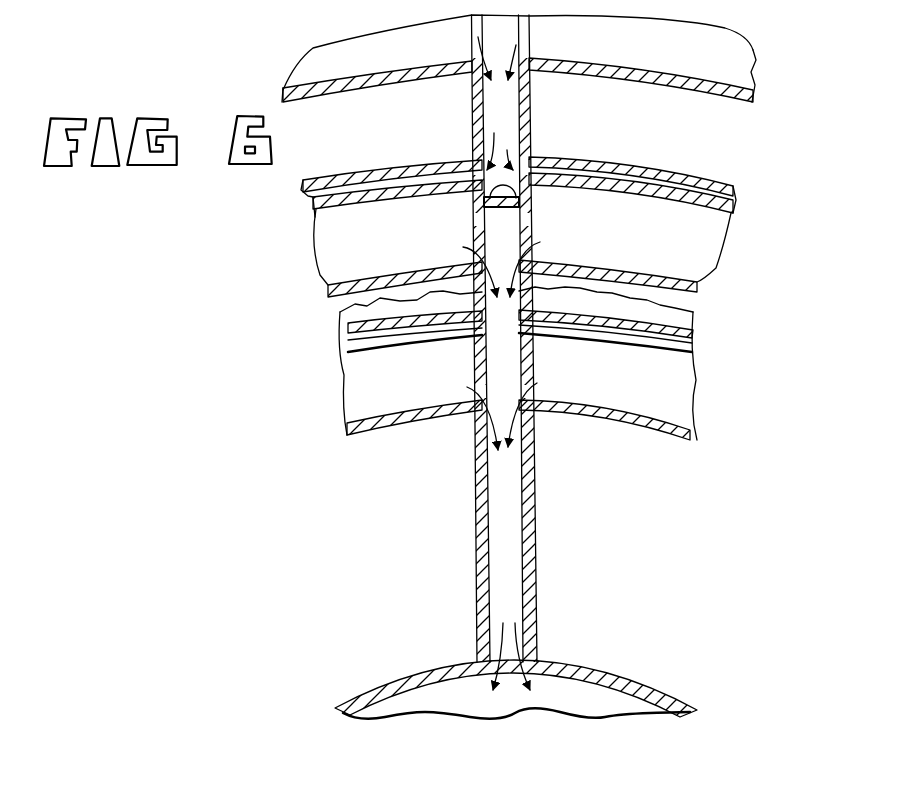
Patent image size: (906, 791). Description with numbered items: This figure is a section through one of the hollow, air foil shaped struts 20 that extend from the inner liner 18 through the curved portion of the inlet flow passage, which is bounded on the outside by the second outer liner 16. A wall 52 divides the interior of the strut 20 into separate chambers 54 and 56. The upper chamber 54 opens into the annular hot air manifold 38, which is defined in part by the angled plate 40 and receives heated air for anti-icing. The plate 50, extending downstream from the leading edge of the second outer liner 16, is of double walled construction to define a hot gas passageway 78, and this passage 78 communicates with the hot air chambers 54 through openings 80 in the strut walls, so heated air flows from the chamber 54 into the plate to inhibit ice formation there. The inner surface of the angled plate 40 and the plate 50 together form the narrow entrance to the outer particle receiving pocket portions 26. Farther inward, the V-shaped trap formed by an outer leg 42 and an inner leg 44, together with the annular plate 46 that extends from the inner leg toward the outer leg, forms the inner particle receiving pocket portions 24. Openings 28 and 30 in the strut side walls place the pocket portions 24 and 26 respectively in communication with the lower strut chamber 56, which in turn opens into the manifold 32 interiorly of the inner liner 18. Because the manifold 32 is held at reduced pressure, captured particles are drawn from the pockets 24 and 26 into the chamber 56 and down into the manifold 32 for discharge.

The second outer liner 16 is at (687, 293).
The inner liner 18 is at (613, 672).
The strut 20 is at (537, 572).
The particle receiving pocket portion 24 is at (385, 410).
The particle receiving pocket portion 26 is at (633, 263).
The opening 28 is at (531, 337).
The opening 30 is at (531, 220).
The manifold 32 is at (562, 691).
The annular manifold 38 is at (517, 58).
The angled plate 40 is at (755, 82).
The outer leg 42 is at (373, 321).
The inner leg 44 is at (283, 473).
The annular plate 46 is at (373, 364).
The plate 50 is at (541, 157).
The wall 52 is at (530, 192).
The strut chamber 54 is at (491, 92).
The strut chamber 56 is at (497, 490).
The hot gas passageway 78 is at (665, 174).
The opening 80 is at (470, 181).